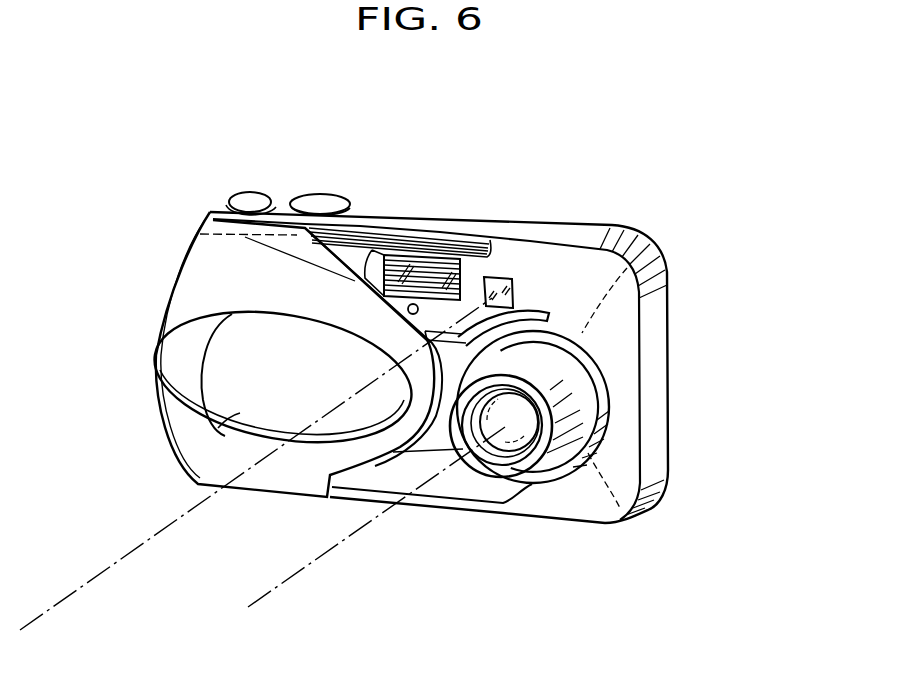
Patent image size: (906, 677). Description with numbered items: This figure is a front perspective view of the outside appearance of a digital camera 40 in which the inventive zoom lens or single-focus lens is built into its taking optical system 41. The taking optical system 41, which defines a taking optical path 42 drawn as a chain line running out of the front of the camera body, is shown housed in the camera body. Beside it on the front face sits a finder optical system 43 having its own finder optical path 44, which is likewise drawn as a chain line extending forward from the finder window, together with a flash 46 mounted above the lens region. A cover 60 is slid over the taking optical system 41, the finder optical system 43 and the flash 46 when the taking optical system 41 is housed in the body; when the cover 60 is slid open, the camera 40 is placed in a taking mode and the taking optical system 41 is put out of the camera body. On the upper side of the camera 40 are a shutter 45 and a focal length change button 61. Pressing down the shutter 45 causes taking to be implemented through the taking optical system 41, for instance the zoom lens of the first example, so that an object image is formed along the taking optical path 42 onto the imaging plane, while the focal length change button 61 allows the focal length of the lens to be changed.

The digital camera 40 is at (142, 236).
The taking optical system 41 is at (505, 428).
The taking optical path 42 is at (297, 577).
The finder optical system 43 is at (499, 278).
The finder optical path 44 is at (58, 603).
The shutter 45 is at (321, 203).
The flash 46 is at (425, 268).
The cover 60 is at (242, 413).
The focal length change button 61 is at (248, 192).